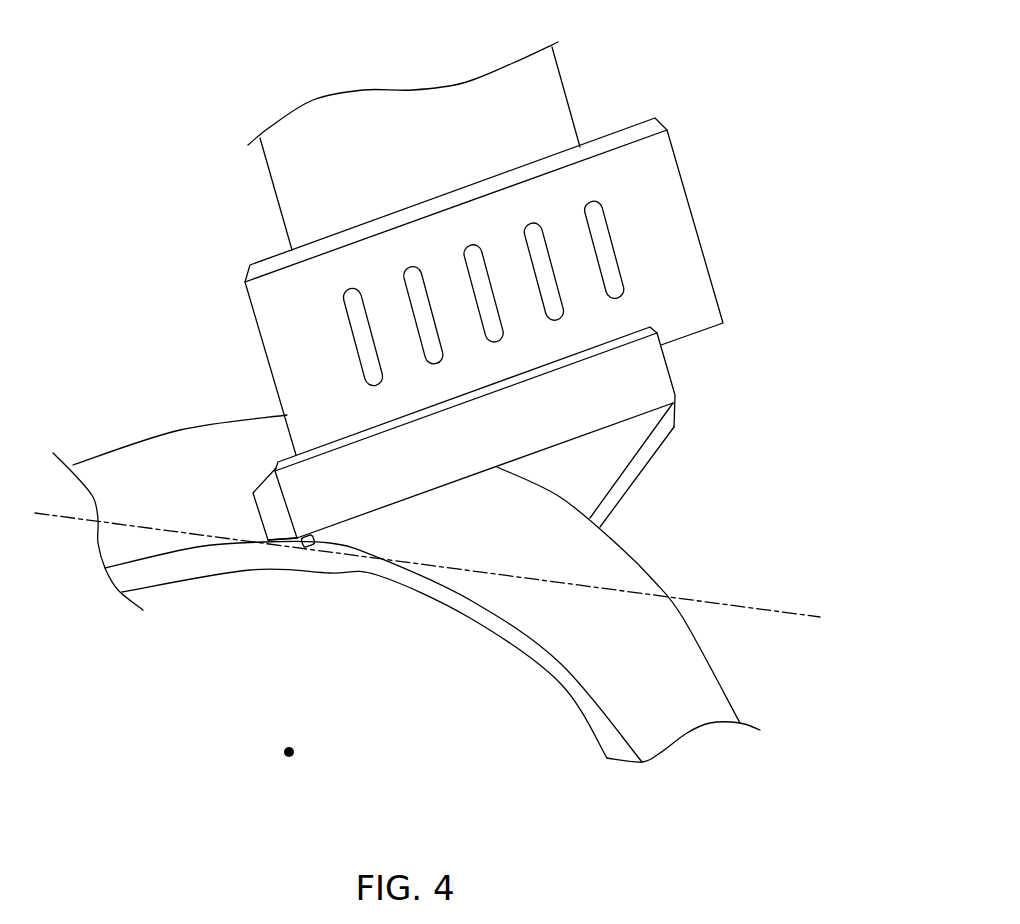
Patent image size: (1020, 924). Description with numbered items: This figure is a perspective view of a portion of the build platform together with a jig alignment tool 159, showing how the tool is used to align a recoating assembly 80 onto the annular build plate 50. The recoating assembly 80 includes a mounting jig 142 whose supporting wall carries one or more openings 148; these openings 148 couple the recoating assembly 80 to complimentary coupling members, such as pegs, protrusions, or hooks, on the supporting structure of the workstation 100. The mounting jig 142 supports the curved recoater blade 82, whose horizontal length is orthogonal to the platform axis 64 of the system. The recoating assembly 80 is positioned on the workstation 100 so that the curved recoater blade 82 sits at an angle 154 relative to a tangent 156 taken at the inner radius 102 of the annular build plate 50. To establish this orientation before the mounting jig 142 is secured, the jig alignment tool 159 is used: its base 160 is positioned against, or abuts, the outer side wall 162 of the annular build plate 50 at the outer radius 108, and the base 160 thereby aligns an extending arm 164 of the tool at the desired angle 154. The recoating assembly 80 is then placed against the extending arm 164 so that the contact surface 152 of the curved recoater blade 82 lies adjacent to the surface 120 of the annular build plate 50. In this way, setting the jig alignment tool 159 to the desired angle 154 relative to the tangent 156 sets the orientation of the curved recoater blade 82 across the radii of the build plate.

The annular build plate 50 is at (436, 588).
The platform axis 64 is at (290, 742).
The recoating assembly 80 is at (467, 348).
The curved recoater blade 82 is at (268, 507).
The workstation 100 is at (595, 85).
The inner radius 102 is at (468, 600).
The outer radius 108 is at (406, 569).
The surface 120 is at (635, 583).
The mounting jig 142 is at (270, 305).
The openings 148 is at (353, 300).
The contact surface 152 is at (288, 550).
The angle 154 is at (317, 540).
The tangent 156 is at (800, 608).
The jig alignment tool 159 is at (675, 387).
The base 160 is at (602, 472).
The outer side wall 162 is at (436, 565).
The extending arm 164 is at (467, 472).